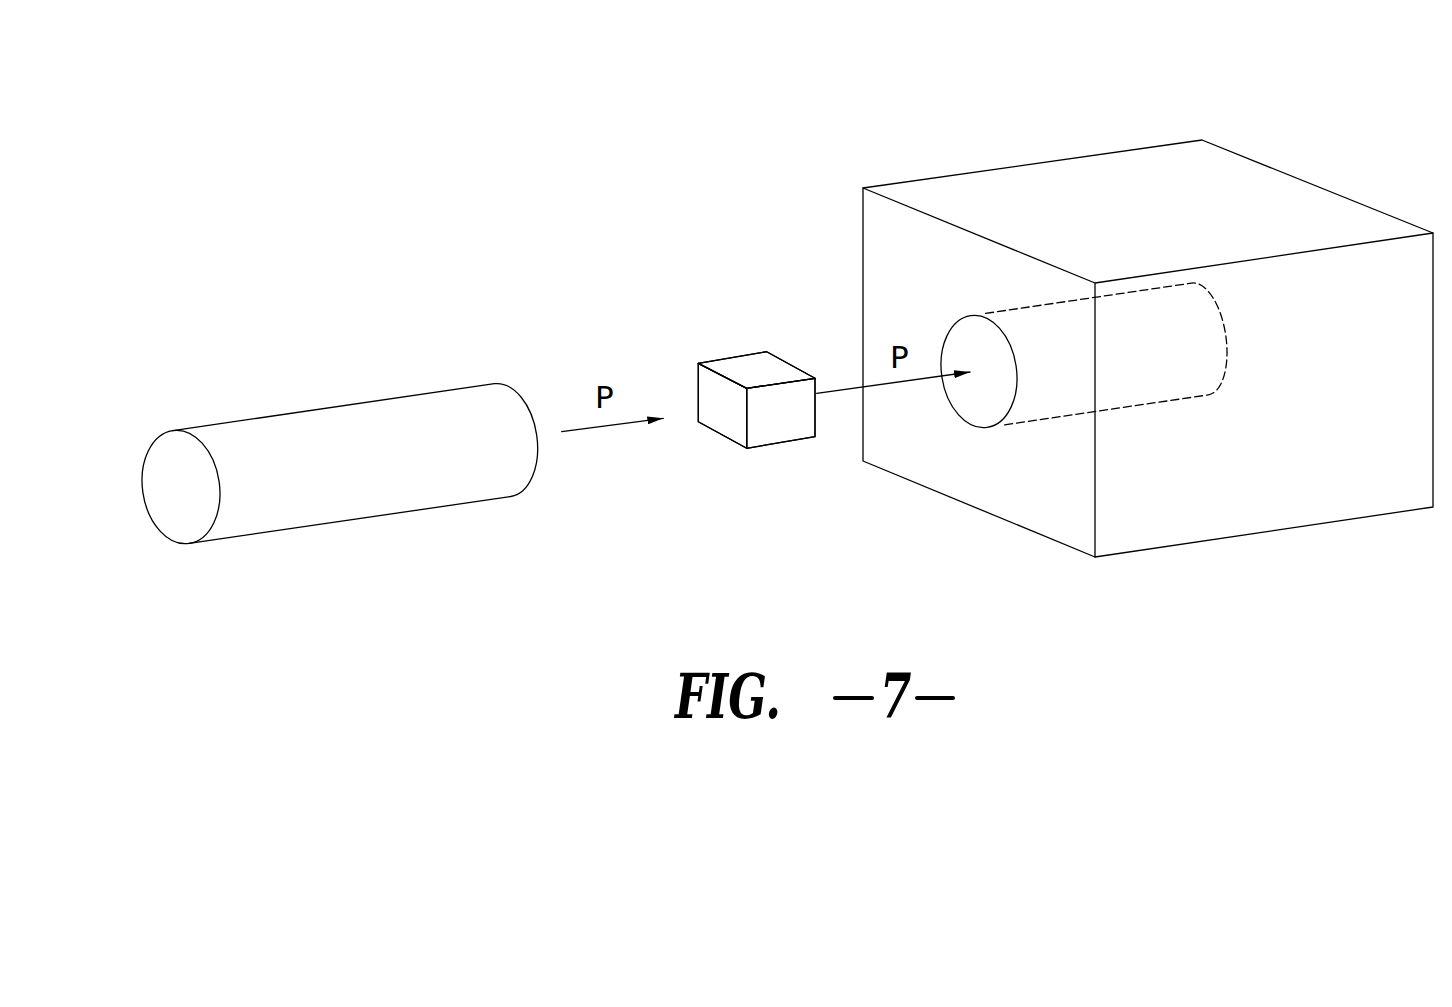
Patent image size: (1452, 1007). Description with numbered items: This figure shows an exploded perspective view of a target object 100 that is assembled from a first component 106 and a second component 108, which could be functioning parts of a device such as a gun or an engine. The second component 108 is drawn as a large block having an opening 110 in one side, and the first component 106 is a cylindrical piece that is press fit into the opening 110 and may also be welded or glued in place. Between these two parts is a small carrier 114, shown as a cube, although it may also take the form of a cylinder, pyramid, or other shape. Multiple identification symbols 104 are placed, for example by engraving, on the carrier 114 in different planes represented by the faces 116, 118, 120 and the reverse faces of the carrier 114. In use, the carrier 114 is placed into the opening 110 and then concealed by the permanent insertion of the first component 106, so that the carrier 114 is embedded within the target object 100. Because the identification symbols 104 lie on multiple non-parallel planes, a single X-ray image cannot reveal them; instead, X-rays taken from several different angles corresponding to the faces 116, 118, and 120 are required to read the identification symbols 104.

The target object 100 is at (515, 195).
The identification symbols 104 is at (778, 362).
The first component 106 is at (333, 418).
The second component 108 is at (1230, 182).
The opening 110 is at (987, 397).
The carrier 114 is at (752, 435).
The face 116 is at (697, 377).
The face 118 is at (742, 363).
The face 120 is at (805, 390).